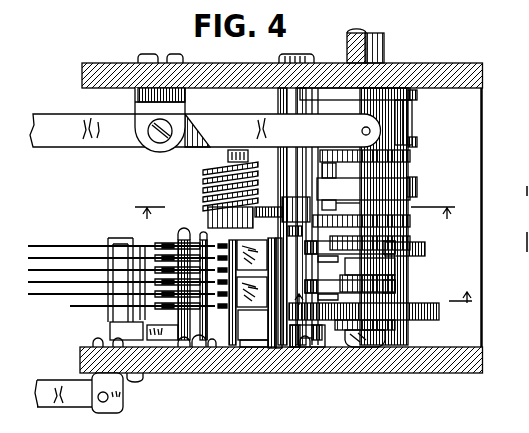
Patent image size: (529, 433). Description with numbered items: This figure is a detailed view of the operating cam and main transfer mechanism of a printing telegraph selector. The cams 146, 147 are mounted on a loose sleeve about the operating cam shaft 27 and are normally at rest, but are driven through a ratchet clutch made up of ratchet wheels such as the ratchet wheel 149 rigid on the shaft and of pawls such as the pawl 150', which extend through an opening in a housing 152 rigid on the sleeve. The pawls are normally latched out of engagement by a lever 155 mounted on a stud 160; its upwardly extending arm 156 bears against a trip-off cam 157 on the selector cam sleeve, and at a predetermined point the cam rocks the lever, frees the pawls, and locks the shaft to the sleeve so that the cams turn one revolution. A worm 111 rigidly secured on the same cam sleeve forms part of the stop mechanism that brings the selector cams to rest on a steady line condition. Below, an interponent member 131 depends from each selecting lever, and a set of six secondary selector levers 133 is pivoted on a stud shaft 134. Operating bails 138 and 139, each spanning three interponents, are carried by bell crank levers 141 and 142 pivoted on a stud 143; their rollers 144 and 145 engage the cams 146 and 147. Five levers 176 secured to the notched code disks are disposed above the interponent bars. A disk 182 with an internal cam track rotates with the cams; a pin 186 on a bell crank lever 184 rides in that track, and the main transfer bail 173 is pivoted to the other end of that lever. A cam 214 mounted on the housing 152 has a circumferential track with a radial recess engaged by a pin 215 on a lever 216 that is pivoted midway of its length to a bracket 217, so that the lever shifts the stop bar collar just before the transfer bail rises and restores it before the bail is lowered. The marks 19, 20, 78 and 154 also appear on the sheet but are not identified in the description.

The section line 19- 19 is at (295, 203).
The section line 20- 20 is at (376, 303).
The operating cam shaft 27 is at (386, 340).
The base plate 78 is at (390, 365).
The worm 111 is at (203, 172).
The interponent member 131 is at (194, 322).
The secondary selector lever 133 is at (226, 308).
The stud shaft 134 is at (175, 330).
The operating bail 138 is at (276, 340).
The operating bail 139 is at (244, 345).
The bell crank lever 141 is at (316, 252).
The bell crank lever 142 is at (316, 289).
The stud 143 is at (254, 347).
The roller 144 is at (350, 250).
The roller 145 is at (340, 280).
The cam 146 is at (425, 250).
The cam 147 is at (388, 283).
The ratchet wheel 149 is at (385, 182).
The pawl 150' is at (341, 179).
The housing 152 is at (386, 46).
The stop 154 is at (417, 189).
The lever 155 is at (290, 200).
The upwardly extending arm 156 is at (302, 232).
The trip-off cam 157 is at (208, 222).
The stud 160 is at (278, 106).
The main transfer bail 173 is at (125, 238).
The lever 176 is at (44, 300).
The disk 182 is at (439, 315).
The bell crank lever 184 is at (150, 340).
The pin 186 is at (315, 347).
The cam 214 is at (412, 130).
The pin 215 is at (362, 131).
The lever 216 is at (205, 130).
The bracket 217 is at (138, 96).